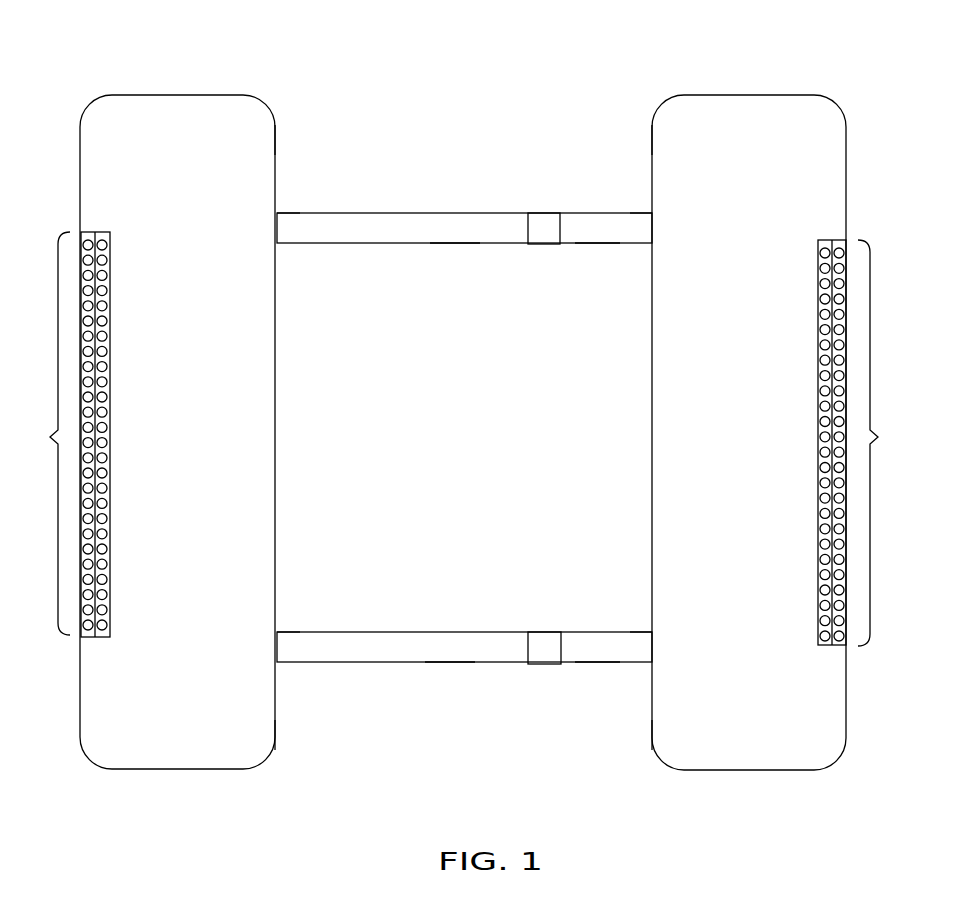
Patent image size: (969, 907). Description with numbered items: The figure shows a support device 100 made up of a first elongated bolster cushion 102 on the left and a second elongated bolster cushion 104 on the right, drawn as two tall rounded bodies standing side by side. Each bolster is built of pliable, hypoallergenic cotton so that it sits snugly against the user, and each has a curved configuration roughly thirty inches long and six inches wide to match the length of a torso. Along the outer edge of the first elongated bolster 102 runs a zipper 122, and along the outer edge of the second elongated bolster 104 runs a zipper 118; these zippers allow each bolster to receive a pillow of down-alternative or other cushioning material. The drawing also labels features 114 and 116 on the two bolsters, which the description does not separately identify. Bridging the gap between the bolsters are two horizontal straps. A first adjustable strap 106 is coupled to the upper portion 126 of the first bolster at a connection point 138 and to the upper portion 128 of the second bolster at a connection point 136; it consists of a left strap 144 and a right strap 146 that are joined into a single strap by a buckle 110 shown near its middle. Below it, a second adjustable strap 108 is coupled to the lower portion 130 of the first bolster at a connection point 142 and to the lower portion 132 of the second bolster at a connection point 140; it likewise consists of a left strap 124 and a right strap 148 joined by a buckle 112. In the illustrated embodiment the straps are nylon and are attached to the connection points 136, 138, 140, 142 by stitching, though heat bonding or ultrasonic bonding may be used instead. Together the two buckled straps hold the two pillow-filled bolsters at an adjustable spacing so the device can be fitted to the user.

The support device 100 is at (156, 44).
The first elongated bolster cushion 102 is at (198, 133).
The second elongated bolster cushion 104 is at (777, 133).
The first adjustable strap 106 is at (422, 213).
The second adjustable strap 108 is at (422, 632).
The buckle 110 is at (545, 221).
The buckle 112 is at (545, 639).
The first connector 114 is at (108, 505).
The second connector 116 is at (820, 505).
The zipper 118 is at (892, 443).
The zipper 122 is at (37, 433).
The left strap 124 is at (450, 663).
The upper portion 126 is at (275, 138).
The upper portion 128 is at (652, 138).
The lower portion 130 is at (276, 737).
The lower portion 132 is at (652, 737).
The connection point 136 is at (651, 213).
The connection point 138 is at (278, 213).
The connection point 140 is at (651, 632).
The connection point 142 is at (278, 632).
The left strap 144 is at (455, 243).
The right strap 146 is at (596, 245).
The right strap 148 is at (596, 664).